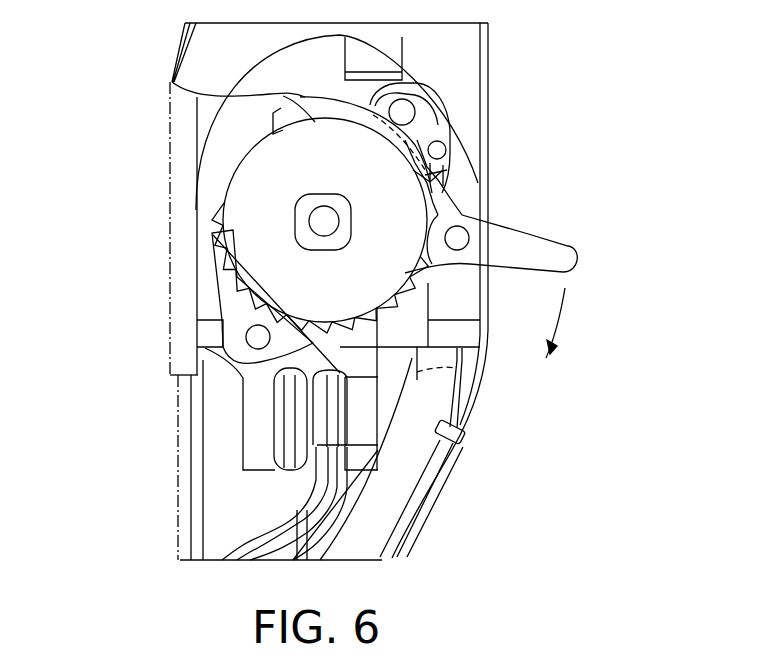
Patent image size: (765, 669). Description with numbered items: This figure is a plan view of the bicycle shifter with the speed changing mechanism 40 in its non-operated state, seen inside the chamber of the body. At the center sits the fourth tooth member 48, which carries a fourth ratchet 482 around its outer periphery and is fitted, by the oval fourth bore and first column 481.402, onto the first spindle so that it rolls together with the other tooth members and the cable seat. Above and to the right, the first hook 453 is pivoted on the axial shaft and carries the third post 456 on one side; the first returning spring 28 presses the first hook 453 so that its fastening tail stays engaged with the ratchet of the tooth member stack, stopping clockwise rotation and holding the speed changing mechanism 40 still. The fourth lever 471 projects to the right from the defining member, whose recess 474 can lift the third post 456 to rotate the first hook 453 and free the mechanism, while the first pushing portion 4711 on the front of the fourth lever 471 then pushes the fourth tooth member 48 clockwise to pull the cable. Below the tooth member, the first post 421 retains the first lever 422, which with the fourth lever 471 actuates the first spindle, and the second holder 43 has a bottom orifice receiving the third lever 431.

The first returning spring 28 is at (347, 80).
The speed changing mechanism 40 is at (228, 265).
The second holder 43 is at (380, 413).
The fourth tooth member 48 is at (210, 98).
The first post 421 is at (243, 403).
The first lever 422 is at (273, 500).
The third lever 431 is at (330, 500).
The first hook 453 is at (449, 130).
The third post 456 is at (447, 147).
The fourth lever 471 is at (582, 256).
The recess 474 is at (447, 170).
The fourth bore and first column 481.402 is at (315, 193).
The fourth ratchet 482 is at (221, 210).
The first pushing portion 4711 is at (475, 267).